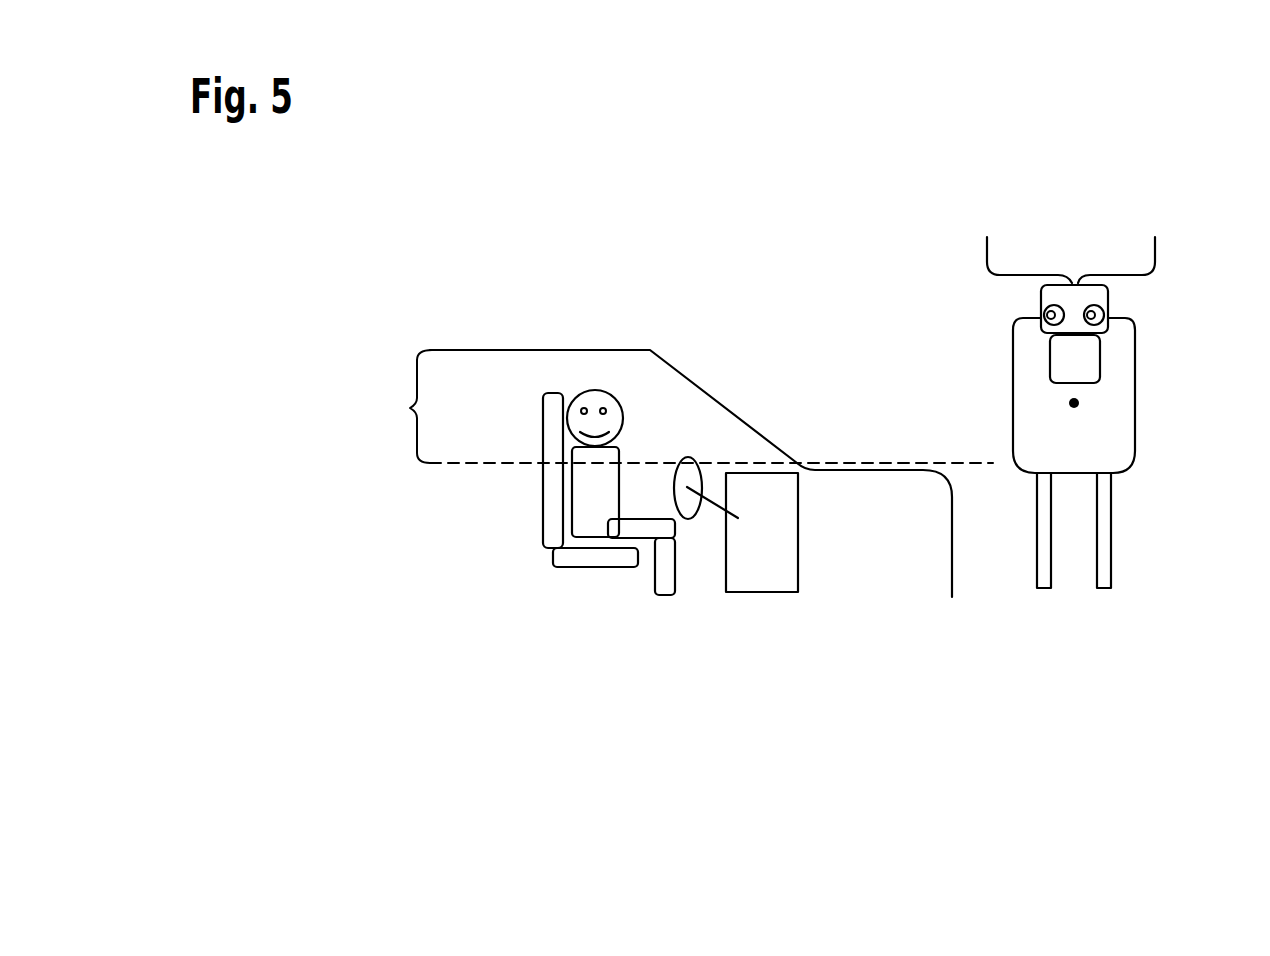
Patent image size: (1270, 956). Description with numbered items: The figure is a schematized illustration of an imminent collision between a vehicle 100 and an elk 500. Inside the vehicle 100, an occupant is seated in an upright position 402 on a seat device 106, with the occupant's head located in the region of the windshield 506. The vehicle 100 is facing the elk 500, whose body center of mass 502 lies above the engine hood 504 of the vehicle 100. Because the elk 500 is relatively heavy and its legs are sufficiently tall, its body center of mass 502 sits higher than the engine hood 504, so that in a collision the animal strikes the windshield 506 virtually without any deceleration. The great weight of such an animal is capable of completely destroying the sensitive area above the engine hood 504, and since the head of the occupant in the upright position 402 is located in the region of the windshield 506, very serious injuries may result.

The upright position 402 is at (583, 309).
The vehicle 100 is at (650, 350).
The seat device 106 is at (595, 568).
The windshield 506 is at (730, 410).
The engine hood 504 is at (886, 468).
The elk 500 is at (1038, 273).
The body center of mass 502 is at (1079, 404).